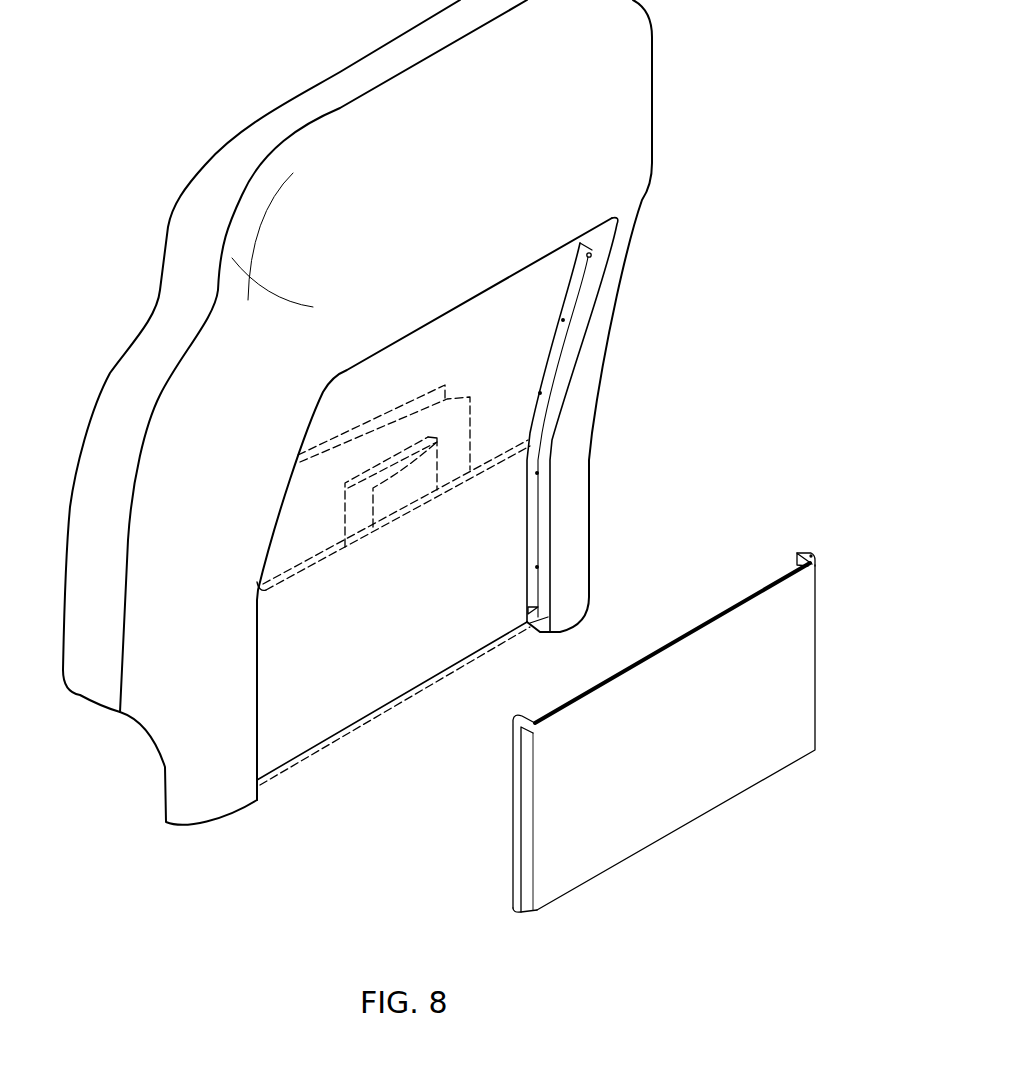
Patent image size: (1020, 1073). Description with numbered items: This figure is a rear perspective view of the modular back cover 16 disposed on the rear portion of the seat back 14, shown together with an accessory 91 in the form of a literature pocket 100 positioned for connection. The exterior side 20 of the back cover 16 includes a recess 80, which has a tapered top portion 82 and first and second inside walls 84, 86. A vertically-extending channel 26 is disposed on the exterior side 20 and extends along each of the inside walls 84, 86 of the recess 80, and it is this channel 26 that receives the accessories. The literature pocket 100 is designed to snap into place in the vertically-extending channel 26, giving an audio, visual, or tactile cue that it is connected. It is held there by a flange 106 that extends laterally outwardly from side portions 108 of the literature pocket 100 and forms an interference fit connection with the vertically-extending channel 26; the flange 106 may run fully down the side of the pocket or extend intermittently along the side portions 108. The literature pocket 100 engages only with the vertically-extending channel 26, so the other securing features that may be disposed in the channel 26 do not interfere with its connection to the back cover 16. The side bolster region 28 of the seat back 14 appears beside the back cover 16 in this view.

The seat back 14 is at (167, 227).
The modular back cover 16 is at (653, 128).
The exterior side 20 is at (273, 177).
The vertically-extending channel 26 is at (546, 352).
The side bolster 28 is at (160, 455).
The recess 80 is at (434, 509).
The tapered top portion 82 is at (427, 330).
The first inside wall 84 is at (257, 663).
The second inside wall 86 is at (533, 624).
The accessory 91 is at (341, 737).
The literature pocket 100 is at (670, 812).
The flange 106 is at (814, 552).
The side portions 108 is at (796, 561).